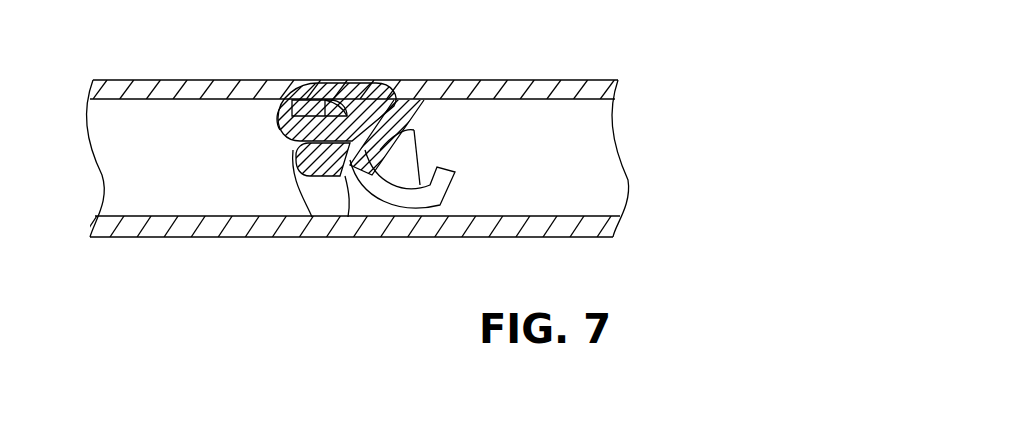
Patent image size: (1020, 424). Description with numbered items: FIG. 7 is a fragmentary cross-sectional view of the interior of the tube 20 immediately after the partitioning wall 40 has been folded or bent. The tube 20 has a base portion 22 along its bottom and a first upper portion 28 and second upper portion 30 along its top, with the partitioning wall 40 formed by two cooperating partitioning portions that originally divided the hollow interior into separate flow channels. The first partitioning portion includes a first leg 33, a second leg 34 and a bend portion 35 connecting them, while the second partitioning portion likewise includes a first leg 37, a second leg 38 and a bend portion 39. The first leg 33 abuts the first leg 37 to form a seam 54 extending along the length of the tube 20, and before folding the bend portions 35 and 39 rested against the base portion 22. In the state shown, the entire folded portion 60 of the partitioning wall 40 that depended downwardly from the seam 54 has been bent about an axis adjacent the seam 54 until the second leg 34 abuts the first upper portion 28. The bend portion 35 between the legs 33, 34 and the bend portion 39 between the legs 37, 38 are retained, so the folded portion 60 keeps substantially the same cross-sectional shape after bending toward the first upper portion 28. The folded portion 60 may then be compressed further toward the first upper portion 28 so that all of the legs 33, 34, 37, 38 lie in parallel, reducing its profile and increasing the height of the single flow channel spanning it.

The tube 20 is at (148, 80).
The base portion 22 is at (463, 225).
The first upper portion 28 is at (203, 88).
The second upper portion 30 is at (465, 88).
The first leg 33 is at (308, 100).
The second leg 34 is at (293, 98).
The bend portion 35 is at (277, 118).
The first leg 37 is at (336, 175).
The second leg 38 is at (328, 185).
The bend portion 39 is at (315, 160).
The partitioning wall 40 is at (428, 152).
The seam 54 is at (390, 86).
The folded portion 60 is at (278, 152).